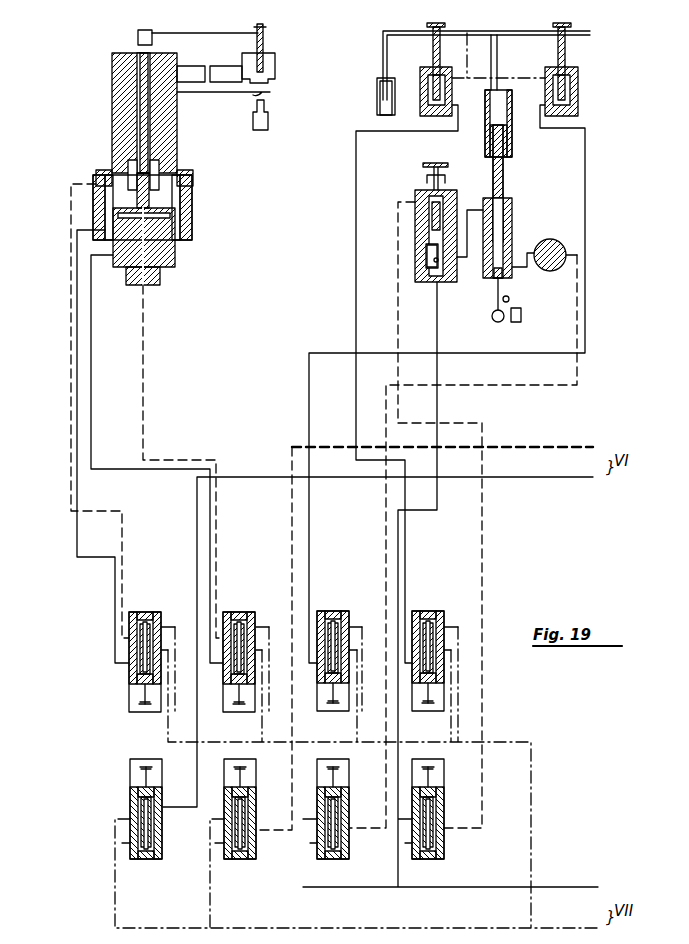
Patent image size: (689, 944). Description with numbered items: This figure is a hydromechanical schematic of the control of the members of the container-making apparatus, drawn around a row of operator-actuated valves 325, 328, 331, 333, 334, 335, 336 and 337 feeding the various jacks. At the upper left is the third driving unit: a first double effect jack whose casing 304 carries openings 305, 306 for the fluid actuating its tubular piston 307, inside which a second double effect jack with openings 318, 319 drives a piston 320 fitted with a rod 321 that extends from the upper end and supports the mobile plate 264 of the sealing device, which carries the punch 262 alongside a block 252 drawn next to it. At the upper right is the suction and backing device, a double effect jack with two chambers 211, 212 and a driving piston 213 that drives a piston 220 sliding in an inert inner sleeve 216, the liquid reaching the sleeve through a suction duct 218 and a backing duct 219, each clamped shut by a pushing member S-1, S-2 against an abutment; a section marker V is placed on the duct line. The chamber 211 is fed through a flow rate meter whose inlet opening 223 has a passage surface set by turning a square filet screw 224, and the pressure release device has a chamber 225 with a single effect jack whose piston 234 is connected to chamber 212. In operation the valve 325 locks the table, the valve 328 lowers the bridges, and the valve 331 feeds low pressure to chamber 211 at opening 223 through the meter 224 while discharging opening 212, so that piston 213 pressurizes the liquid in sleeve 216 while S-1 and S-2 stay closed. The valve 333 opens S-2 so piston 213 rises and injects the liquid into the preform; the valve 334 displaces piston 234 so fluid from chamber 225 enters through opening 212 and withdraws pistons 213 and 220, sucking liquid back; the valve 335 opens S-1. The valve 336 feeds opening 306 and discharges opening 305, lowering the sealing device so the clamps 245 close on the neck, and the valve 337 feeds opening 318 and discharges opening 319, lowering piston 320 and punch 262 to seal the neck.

The rod 321 is at (138, 37).
The mobile plate 264 is at (208, 36).
The punch 262 is at (265, 50).
The block 252 is at (276, 70).
The clamps 245 is at (272, 93).
The piston 307 is at (172, 127).
The opening 306 is at (97, 178).
The casing 304 is at (190, 234).
The piston 320 is at (160, 282).
The opening 305 is at (77, 230).
The opening 319 is at (97, 324).
The opening 318 is at (148, 336).
The suction duct 218 is at (388, 38).
The section V is at (516, 37).
The backing duct 219 is at (526, 34).
The pushing member S-1 is at (433, 58).
The pushing member S-2 is at (568, 58).
The inner sleeve 216 is at (485, 130).
The piston 220 is at (505, 168).
The piston 234 is at (415, 212).
The chamber 225 is at (415, 260).
The chamber 212 is at (474, 208).
The driving piston 213 is at (505, 250).
The chamber 211 is at (505, 282).
The square filet screw 224 is at (560, 241).
The inlet opening 223 is at (583, 258).
The valve 336 is at (130, 614).
The valve 337 is at (224, 613).
The valve 333 is at (319, 612).
The valve 335 is at (413, 612).
The valve 331 is at (345, 860).
The valve 328 is at (134, 862).
The valve 325 is at (227, 862).
The valve 334 is at (446, 856).